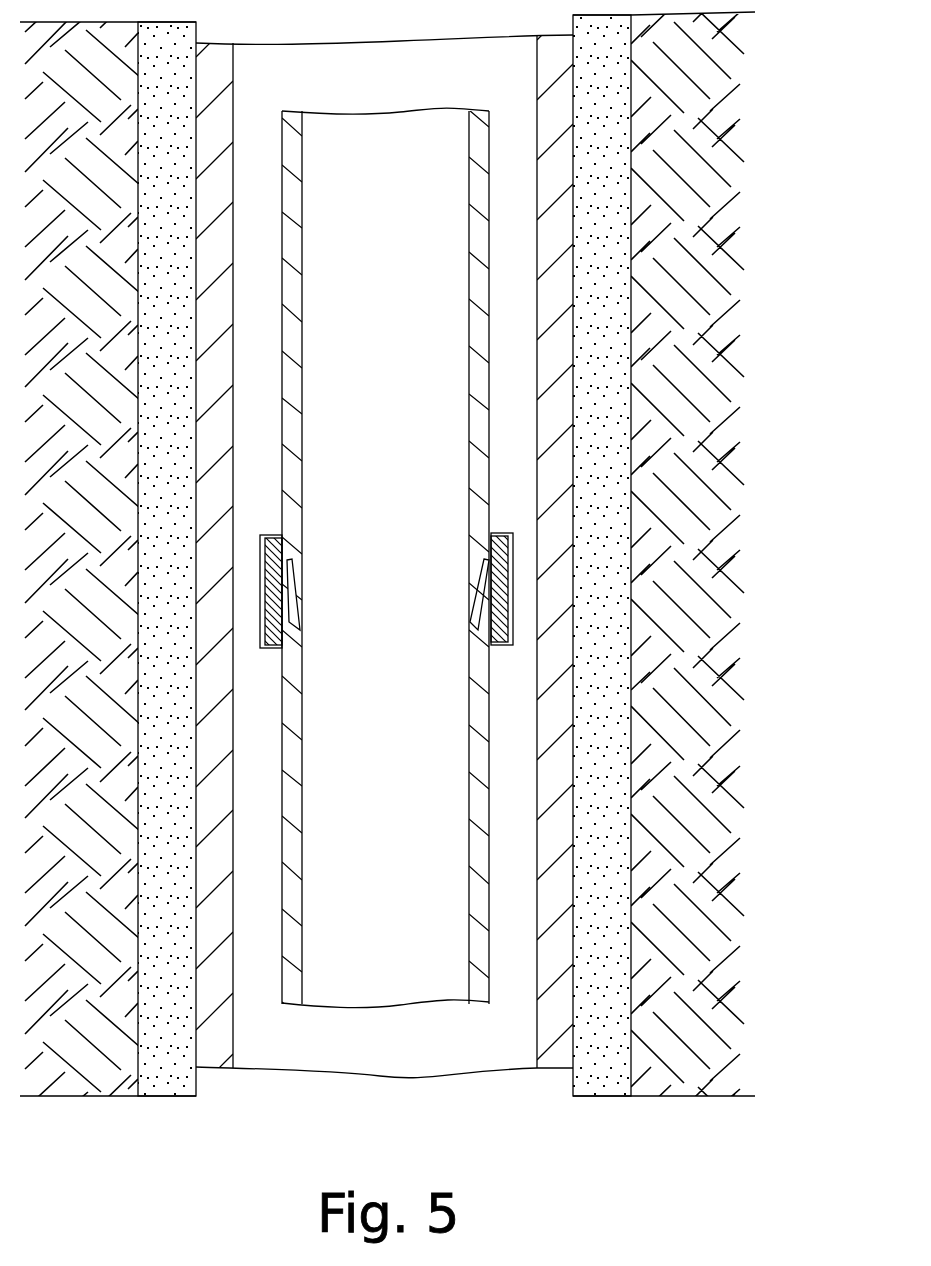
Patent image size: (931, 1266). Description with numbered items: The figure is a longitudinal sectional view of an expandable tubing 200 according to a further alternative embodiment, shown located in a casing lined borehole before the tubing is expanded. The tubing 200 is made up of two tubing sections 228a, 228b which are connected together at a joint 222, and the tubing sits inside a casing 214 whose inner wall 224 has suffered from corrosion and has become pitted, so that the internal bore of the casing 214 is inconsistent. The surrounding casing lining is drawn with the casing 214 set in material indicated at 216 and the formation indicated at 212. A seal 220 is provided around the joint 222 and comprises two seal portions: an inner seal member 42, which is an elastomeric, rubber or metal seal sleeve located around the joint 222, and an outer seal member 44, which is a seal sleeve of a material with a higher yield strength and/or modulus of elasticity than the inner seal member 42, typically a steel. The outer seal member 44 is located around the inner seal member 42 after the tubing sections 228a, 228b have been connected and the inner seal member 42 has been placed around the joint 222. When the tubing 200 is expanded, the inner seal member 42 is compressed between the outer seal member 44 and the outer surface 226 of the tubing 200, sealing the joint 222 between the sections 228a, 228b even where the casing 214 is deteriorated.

The expandable tubing 200 is at (555, 543).
The inner seal member 42 is at (497, 534).
The outer seal member 44 is at (513, 608).
The formation 212 is at (633, 690).
The casing 214 is at (540, 738).
The cement 216 is at (593, 813).
The seal 220 is at (539, 569).
The joint 222 is at (317, 613).
The inner wall of the casing 224 is at (538, 1033).
The outer surface of the tubing 226 is at (492, 950).
The tubing section 228a is at (478, 195).
The tubing section 228b is at (477, 872).